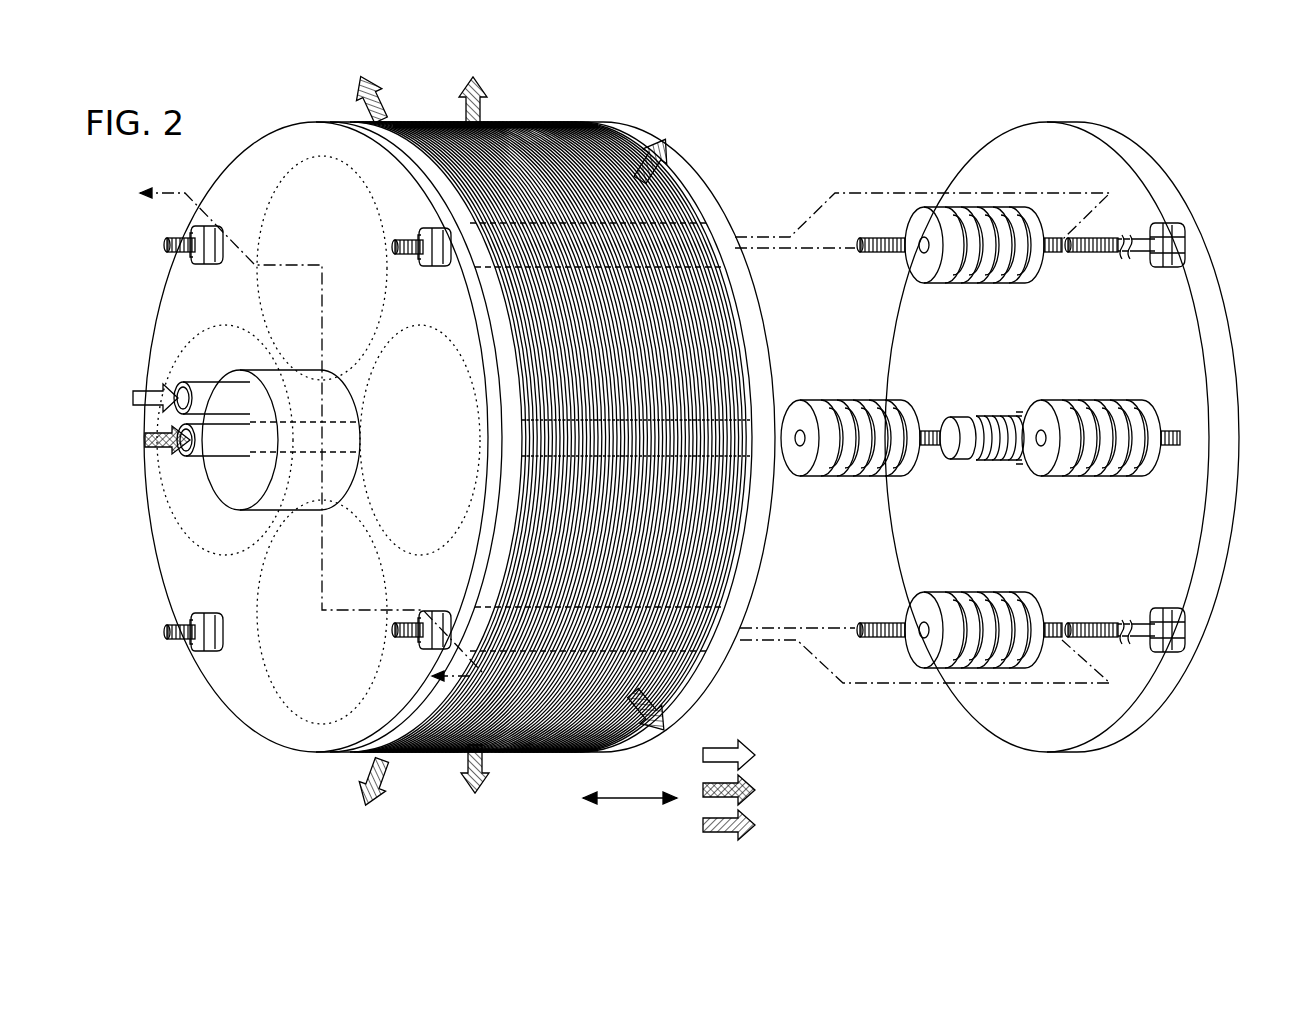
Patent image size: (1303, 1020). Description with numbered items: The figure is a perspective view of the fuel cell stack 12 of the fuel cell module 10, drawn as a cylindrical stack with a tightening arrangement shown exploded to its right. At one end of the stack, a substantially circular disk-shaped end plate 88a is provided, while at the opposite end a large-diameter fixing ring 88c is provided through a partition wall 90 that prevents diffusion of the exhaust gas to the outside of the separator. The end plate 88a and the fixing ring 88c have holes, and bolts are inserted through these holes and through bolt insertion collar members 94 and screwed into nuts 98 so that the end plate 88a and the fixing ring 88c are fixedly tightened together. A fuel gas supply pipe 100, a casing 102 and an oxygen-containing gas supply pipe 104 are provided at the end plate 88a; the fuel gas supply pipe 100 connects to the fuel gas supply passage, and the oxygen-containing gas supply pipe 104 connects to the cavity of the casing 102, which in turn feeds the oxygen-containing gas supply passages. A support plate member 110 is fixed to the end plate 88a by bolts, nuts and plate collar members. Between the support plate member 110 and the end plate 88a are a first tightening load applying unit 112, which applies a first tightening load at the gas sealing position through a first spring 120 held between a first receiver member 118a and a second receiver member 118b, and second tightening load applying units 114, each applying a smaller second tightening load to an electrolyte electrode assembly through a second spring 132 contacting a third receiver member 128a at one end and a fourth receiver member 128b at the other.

The fuel cell module 10 is at (244, 137).
The fuel cell stack 12 is at (520, 126).
The end plate 88a is at (393, 126).
The fixing ring 88c is at (632, 134).
The partition wall (terminal plate) 90 is at (703, 227).
The bolt insertion collar member 94 is at (450, 605).
The nut 98 is at (418, 640).
The fuel gas supply pipe 100 is at (240, 452).
The casing 102 is at (287, 490).
The oxygen-containing gas supply pipe 104 is at (200, 391).
The support plate member 110 is at (1142, 150).
The first tightening load applying unit 112 is at (952, 466).
The second tightening load applying unit 114 is at (1083, 389).
The first receiver member 118a is at (965, 398).
The second receiver member 118b is at (1025, 412).
The first spring 120 is at (988, 462).
The third receiver member 128a is at (1047, 410).
The fourth receiver member 128b is at (1148, 410).
The second spring 132 is at (1096, 473).